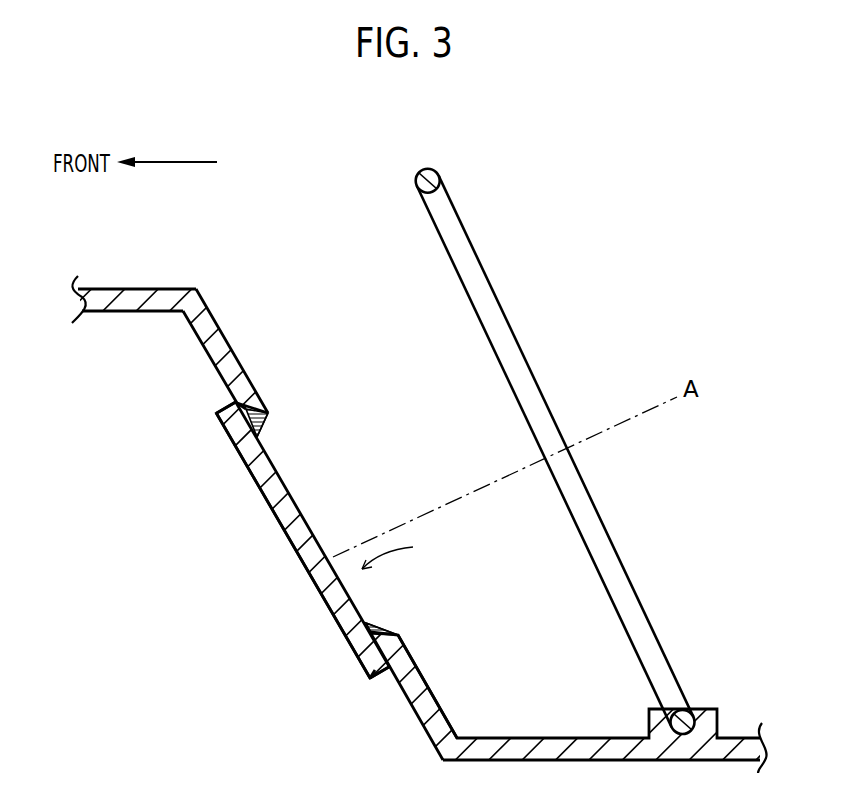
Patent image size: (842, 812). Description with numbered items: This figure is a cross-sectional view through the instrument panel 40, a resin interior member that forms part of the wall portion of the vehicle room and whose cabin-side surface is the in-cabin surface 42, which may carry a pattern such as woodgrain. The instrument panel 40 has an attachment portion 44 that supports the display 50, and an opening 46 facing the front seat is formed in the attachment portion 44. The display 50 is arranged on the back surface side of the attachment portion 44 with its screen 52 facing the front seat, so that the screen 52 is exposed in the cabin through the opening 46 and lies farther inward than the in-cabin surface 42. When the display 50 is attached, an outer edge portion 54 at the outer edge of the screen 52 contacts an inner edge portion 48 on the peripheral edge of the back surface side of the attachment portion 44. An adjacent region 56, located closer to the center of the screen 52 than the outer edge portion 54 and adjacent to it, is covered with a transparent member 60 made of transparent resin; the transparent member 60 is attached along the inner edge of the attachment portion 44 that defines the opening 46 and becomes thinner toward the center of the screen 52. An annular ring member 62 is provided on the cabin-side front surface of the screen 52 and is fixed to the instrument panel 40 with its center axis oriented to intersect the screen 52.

The instrument panel 40 is at (102, 288).
The in-cabin surface 42 is at (205, 309).
The attachment portion 44 is at (236, 403).
The opening 46 is at (401, 549).
The inner edge portion 48 is at (235, 414).
The display 50 is at (276, 512).
The screen 52 is at (298, 498).
The outer edge portion 54 is at (265, 410).
The adjacent region 56 is at (263, 437).
The transparent member 60 is at (268, 421).
The ring member 62 is at (436, 170).